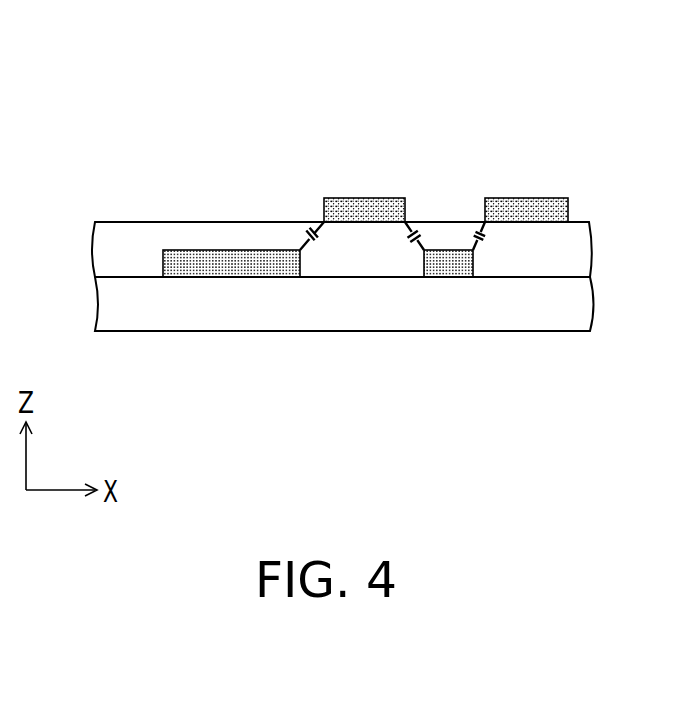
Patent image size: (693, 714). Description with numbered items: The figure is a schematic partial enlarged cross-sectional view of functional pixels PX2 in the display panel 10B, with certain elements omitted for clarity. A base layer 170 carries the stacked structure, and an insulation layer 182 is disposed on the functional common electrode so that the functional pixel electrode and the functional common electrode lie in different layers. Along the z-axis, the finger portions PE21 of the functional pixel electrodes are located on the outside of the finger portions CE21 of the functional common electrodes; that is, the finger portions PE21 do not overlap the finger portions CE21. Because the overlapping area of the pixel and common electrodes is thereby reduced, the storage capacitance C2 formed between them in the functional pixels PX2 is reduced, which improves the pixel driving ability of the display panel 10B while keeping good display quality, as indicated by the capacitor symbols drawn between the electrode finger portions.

The insulation layer 182 is at (100, 240).
The substrate layer 170 is at (105, 318).
The storage capacitance C2 is at (305, 231).
The finger portion of the functional pixel electrode PE21 is at (380, 198).
The finger portion of the functional common electrode CE21 is at (442, 277).
The functional pixel PX2 is at (341, 257).
The display panel 10B is at (668, 507).